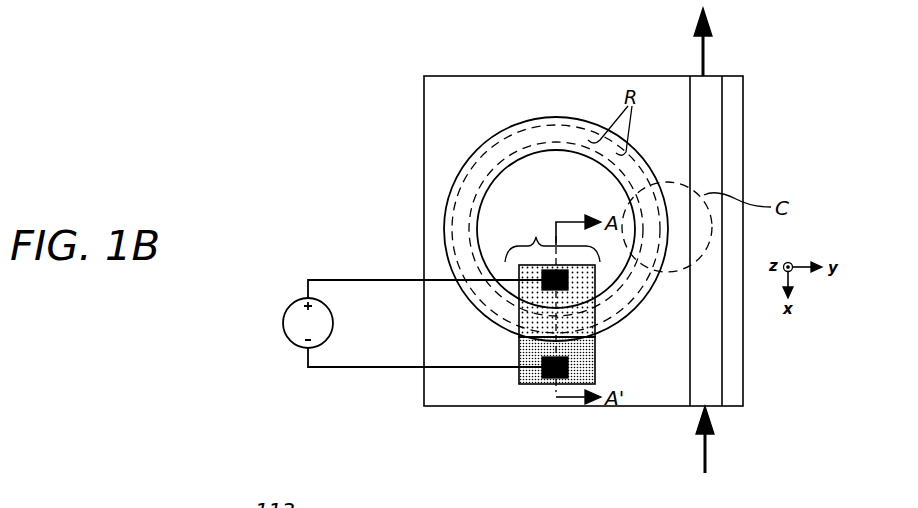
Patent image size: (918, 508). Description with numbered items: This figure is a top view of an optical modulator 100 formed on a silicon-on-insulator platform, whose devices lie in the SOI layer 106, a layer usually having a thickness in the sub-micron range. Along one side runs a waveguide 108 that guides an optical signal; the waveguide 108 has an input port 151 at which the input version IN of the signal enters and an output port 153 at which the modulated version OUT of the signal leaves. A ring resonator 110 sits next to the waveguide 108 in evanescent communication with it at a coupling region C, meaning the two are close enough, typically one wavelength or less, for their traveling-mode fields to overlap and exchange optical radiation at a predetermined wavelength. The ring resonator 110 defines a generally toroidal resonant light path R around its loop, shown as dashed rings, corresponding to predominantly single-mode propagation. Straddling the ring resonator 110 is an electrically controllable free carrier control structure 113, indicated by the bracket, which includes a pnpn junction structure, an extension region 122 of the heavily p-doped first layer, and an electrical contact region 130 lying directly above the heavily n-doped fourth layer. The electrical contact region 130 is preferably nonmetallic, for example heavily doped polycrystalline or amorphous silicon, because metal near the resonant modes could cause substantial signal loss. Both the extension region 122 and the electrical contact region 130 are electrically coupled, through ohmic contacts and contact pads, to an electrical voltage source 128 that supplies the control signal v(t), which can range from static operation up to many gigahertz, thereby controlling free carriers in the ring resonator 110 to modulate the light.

The optical modulator 100 is at (270, 143).
The SOI layer 106 is at (452, 105).
The waveguide 108 is at (722, 125).
The ring resonator 110 is at (446, 196).
The free carrier control structure 113 is at (552, 234).
The extension region 122 is at (582, 358).
The electrical voltage source 128 is at (283, 326).
The electrical contact region 130 is at (535, 305).
The input port 151 is at (709, 406).
The output port 153 is at (712, 76).